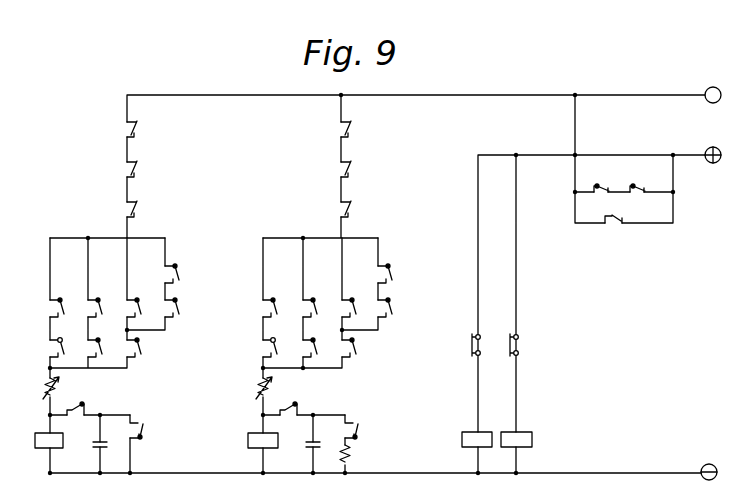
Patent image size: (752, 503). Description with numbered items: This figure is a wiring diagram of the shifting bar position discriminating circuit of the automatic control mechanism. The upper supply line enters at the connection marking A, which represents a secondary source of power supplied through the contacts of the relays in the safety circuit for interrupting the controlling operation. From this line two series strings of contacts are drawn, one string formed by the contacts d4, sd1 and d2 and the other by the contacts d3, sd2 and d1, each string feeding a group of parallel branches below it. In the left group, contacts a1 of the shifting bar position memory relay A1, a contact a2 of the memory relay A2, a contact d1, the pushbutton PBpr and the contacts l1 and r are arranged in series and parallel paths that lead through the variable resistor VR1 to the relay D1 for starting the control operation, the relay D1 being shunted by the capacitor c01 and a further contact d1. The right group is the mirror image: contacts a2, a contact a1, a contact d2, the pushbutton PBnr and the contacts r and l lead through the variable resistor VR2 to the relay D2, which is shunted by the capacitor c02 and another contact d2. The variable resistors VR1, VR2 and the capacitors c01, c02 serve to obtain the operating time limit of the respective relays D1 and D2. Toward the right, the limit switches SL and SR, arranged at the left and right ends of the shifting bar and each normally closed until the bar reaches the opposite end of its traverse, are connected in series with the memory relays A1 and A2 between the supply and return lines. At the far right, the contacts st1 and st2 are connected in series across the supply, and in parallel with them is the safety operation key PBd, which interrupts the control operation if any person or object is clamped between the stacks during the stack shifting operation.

The relay D contact d4 is at (140, 130).
The contact sd1 is at (143, 170).
The contact of relay D2 d2 is at (266, 320).
The relay D contact d3 is at (354, 130).
The contact sd2 is at (357, 170).
The contact of relay D1 d1 is at (217, 320).
The contact of relay A1 a1 is at (206, 286).
The contact of relay A2 a2 is at (266, 286).
The push button PBpr is at (63, 341).
The push button PBnr is at (276, 341).
The contact l1 is at (99, 347).
The contact l is at (351, 347).
The contact r is at (226, 347).
The variable resistor VR1 is at (38, 388).
The variable resistor VR2 is at (250, 388).
The relay for starting control operation D1 is at (49, 442).
The relay for starting control operation D2 is at (263, 442).
The shifting bar position memory relay A1 is at (477, 441).
The shifting bar position memory relay A2 is at (516, 441).
The capacitor c01 is at (91, 455).
The capacitor c02 is at (305, 455).
The limit switch SL is at (464, 345).
The limit switch SR is at (525, 345).
The contact st1 is at (599, 180).
The contact st2 is at (636, 180).
The safety operation key PBd is at (613, 233).
The line connection marking A is at (713, 95).